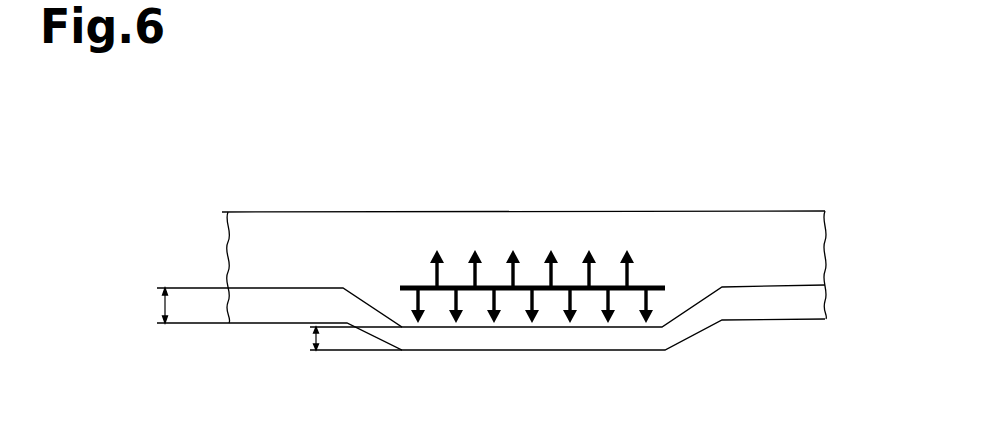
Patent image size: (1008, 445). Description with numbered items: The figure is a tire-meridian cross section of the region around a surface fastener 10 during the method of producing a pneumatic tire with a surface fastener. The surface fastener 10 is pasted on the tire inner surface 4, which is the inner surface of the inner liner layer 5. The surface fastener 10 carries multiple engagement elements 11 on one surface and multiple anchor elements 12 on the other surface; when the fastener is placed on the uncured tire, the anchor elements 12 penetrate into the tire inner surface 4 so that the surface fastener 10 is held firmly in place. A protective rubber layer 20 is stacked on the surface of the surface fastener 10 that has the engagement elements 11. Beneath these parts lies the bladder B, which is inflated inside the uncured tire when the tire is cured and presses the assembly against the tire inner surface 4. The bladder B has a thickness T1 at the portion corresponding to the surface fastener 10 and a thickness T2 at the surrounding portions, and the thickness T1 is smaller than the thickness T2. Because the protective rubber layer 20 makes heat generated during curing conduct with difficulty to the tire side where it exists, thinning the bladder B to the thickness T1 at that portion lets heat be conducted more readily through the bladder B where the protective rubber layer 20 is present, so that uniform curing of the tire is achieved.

The tire inner surface 4 is at (265, 290).
The inner liner layer 5 is at (812, 249).
The bladder B is at (813, 305).
The surface fastener 10 is at (413, 285).
The engagement element 11 is at (524, 299).
The anchor element 12 is at (478, 277).
The protective rubber layer 20 is at (680, 299).
The thickness at portion corresponding to surface fastener T1 is at (302, 340).
The thickness at surrounding portions T2 is at (150, 305).